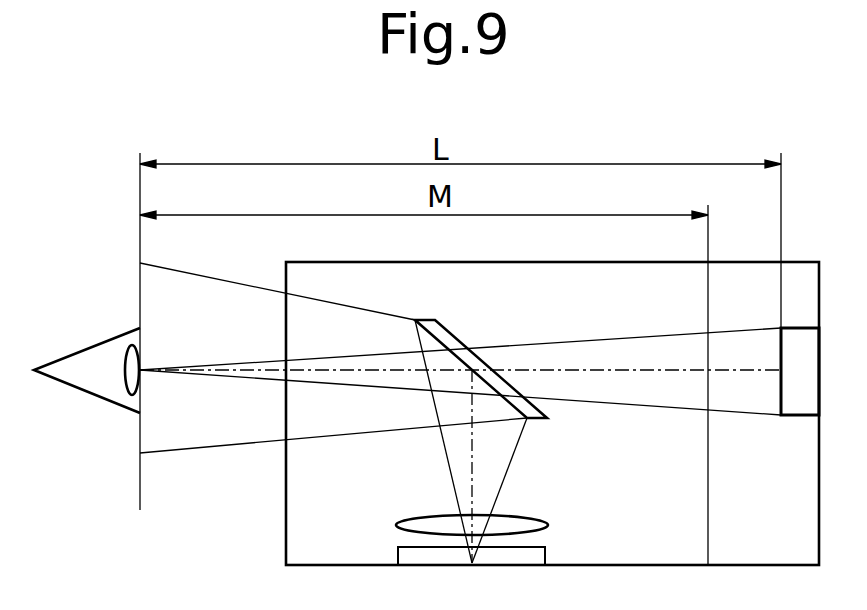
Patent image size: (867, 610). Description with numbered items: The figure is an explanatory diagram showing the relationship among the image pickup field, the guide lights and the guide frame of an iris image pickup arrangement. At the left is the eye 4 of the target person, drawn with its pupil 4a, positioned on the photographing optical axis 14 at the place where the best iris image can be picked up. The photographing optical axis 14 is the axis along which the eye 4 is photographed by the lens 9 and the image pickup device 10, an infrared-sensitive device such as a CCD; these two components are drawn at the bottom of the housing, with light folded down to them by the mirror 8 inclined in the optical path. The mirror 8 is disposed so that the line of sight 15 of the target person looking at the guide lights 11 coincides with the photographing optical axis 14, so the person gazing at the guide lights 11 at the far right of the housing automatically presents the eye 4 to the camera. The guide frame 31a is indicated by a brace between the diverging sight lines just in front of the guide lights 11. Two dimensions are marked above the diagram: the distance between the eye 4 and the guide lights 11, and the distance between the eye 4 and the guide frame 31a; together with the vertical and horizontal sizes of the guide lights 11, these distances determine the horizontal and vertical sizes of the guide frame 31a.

The eye of the target person 4 is at (93, 345).
The pupil 4a is at (140, 355).
The mirror 8 is at (452, 330).
The lens 9 is at (527, 513).
The image pickup device 10 is at (548, 553).
The guide lights 11 is at (792, 418).
The photographing optical axis 14 is at (470, 468).
The line of sight 15 is at (592, 372).
The guide frame 31a is at (708, 408).